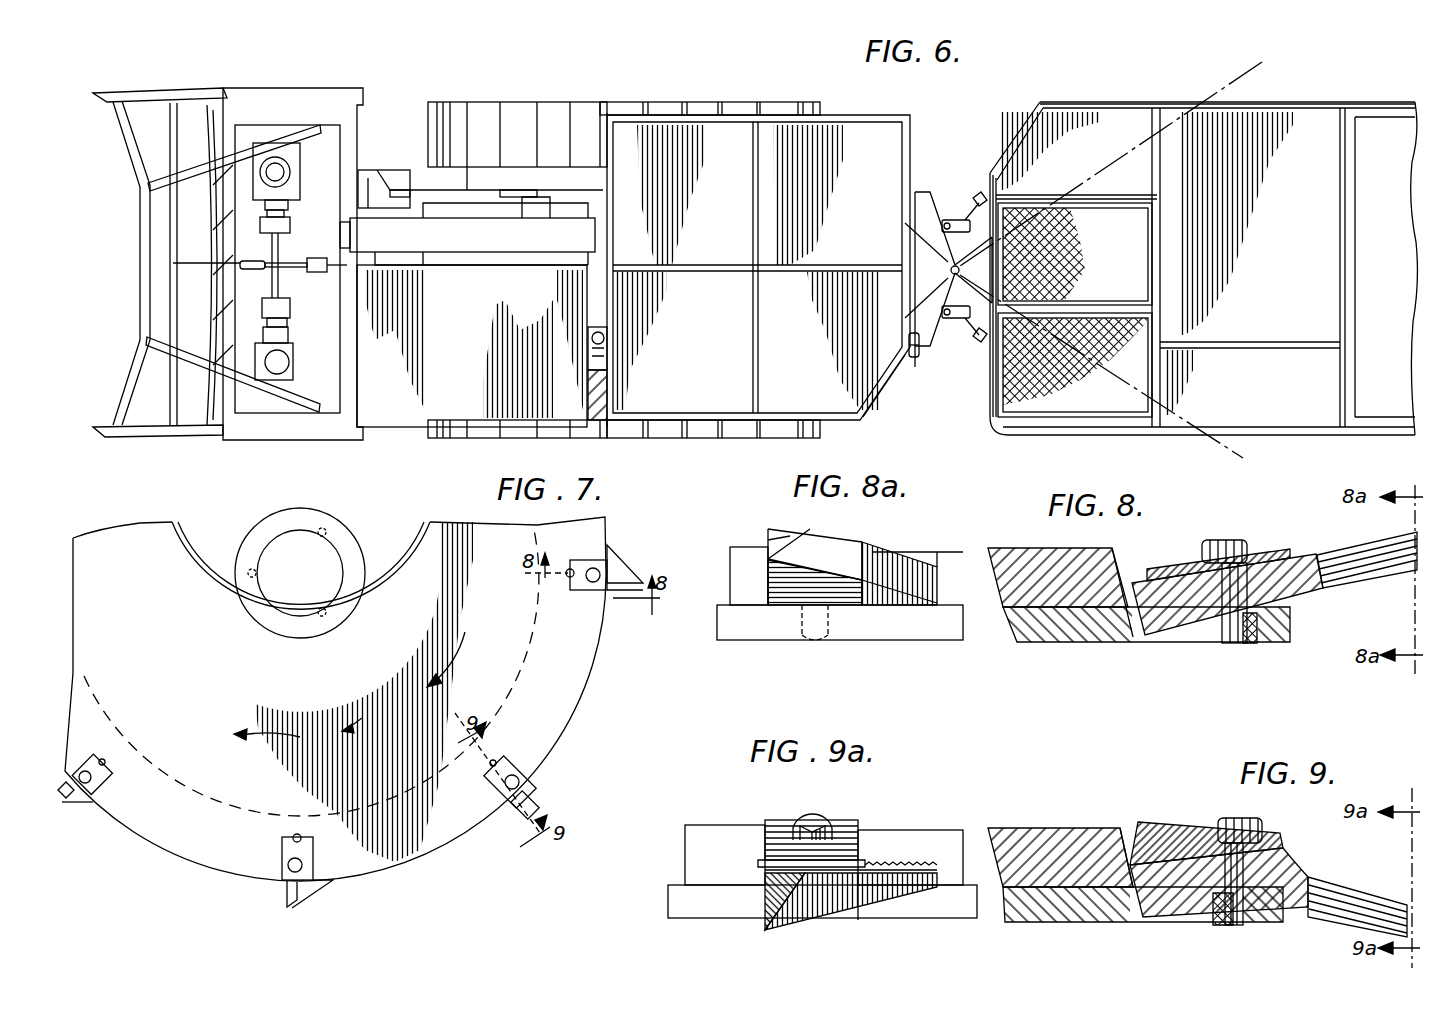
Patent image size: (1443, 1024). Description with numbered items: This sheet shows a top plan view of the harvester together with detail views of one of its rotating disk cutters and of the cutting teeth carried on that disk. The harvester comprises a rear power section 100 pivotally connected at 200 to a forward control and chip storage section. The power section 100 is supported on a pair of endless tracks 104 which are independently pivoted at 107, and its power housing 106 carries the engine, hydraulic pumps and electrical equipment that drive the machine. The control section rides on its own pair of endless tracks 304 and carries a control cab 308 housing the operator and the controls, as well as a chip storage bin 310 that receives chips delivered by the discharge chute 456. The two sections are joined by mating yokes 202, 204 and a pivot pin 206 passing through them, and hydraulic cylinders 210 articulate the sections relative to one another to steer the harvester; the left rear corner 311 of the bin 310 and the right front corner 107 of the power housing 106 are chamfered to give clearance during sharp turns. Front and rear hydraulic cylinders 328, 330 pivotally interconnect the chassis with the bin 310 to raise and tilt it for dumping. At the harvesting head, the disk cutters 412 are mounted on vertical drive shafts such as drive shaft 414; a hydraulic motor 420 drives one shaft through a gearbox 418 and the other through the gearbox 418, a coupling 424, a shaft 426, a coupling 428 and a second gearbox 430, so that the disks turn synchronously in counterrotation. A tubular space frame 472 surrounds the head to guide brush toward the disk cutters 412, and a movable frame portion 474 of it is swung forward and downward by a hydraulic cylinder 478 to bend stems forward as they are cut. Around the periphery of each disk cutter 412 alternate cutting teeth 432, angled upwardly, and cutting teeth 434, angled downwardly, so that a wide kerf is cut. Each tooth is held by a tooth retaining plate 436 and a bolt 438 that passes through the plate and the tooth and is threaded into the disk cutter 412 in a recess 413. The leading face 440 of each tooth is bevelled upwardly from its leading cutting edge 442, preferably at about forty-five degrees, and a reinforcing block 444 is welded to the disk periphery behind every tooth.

In FIG. 6, the rear power section 100 is at (1287, 94).
In FIG. 6, the endless tracks 104 is at (1007, 108).
In FIG. 6, the power housing 106 is at (1103, 104).
In FIG. 6, the right front corner of power housing 107 is at (1008, 152).
In FIG. 6, the pivotal connection 200 is at (969, 180).
In FIG. 6, the yoke 202 is at (982, 263).
In FIG. 6, the yoke 204 is at (945, 257).
In FIG. 6, the pivot pin 206 is at (948, 273).
In FIG. 6, the hydraulic cylinders 210 is at (965, 221).
In FIG. 6, the endless tracks 304 is at (428, 124).
In FIG. 6, the control cab 308 is at (417, 423).
In FIG. 6, the chip storage bin 310 is at (882, 370).
In FIG. 6, the left rear corner of bin 311 is at (873, 405).
In FIG. 6, the front hydraulic cylinder 328 is at (607, 340).
In FIG. 6, the rear hydraulic cylinder 330 is at (910, 346).
In FIG. 6, the disk cutter 412 is at (200, 160).
In FIG. 7, the disk cutter 412 is at (567, 720).
In FIG. 8A, the disk cutter 412 is at (883, 633).
In FIG. 8, the disk cutter 412 is at (1098, 637).
In FIG. 9A, the disk cutter 412 is at (722, 915).
In FIG. 9, the disk cutter 412 is at (1057, 915).
In FIG. 8, the recess 413 is at (1122, 562).
In FIG. 9, the recess 413 is at (1127, 838).
In FIG. 7, the vertical drive shaft 414 is at (337, 585).
In FIG. 6, the gearbox 418 is at (288, 193).
In FIG. 6, the hydraulic motor 420 is at (280, 164).
In FIG. 6, the coupling 424 is at (284, 227).
In FIG. 6, the shaft 426 is at (283, 288).
In FIG. 6, the coupling 428 is at (290, 312).
In FIG. 6, the gearbox 430 is at (292, 368).
In FIG. 7, the cutting teeth 432 is at (290, 895).
In FIG. 8A, the cutting teeth 432 is at (834, 544).
In FIG. 8, the cutting teeth 432 is at (1297, 593).
In FIG. 7, the cutting teeth 434 is at (92, 798).
In FIG. 9A, the cutting teeth 434 is at (820, 920).
In FIG. 9, the cutting teeth 434 is at (1288, 883).
In FIG. 8, the tooth retaining plate 436 is at (1282, 552).
In FIG. 9A, the tooth retaining plate 436 is at (775, 825).
In FIG. 9, the tooth retaining plate 436 is at (1147, 825).
In FIG. 8, the bolt 438 is at (1218, 539).
In FIG. 9A, the bolt 438 is at (822, 821).
In FIG. 9, the bolt 438 is at (1245, 827).
In FIG. 8A, the leading face 440 is at (768, 547).
In FIG. 8, the leading face 440 is at (1398, 546).
In FIG. 9A, the leading face 440 is at (765, 907).
In FIG. 9, the leading face 440 is at (1396, 906).
In FIG. 8A, the leading cutting edge 442 is at (768, 563).
In FIG. 8, the leading cutting edge 442 is at (1408, 573).
In FIG. 9A, the leading cutting edge 442 is at (765, 930).
In FIG. 9, the leading cutting edge 442 is at (1374, 928).
In FIG. 8A, the reinforcing block 444 is at (880, 558).
In FIG. 9A, the reinforcing block 444 is at (880, 877).
In FIG. 6, the discharge chute 456 is at (507, 246).
In FIG. 6, the tubular space frame 472 is at (140, 440).
In FIG. 6, the movable frame portion 474 is at (170, 262).
In FIG. 6, the hydraulic cylinder 478 is at (264, 270).